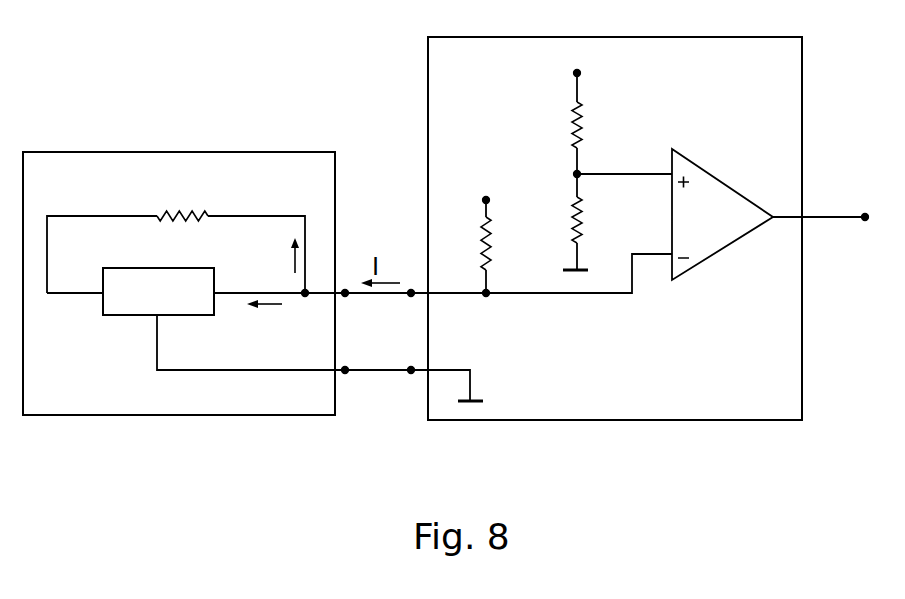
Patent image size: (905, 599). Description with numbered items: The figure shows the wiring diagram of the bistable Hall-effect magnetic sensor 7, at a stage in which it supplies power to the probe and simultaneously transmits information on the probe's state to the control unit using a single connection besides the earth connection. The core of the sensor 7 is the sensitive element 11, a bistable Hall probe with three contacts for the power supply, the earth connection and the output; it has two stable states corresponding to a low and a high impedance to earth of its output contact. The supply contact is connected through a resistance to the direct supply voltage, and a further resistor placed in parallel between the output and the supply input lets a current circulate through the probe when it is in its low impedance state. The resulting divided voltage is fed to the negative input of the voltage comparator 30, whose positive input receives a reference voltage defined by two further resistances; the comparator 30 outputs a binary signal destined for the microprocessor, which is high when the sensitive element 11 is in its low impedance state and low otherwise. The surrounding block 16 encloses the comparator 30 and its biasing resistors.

The bistable magnetic sensor 7 is at (184, 283).
The sensitive element 11 is at (158, 291).
The evaluation circuit 16 is at (648, 228).
The voltage comparator 30 is at (723, 203).